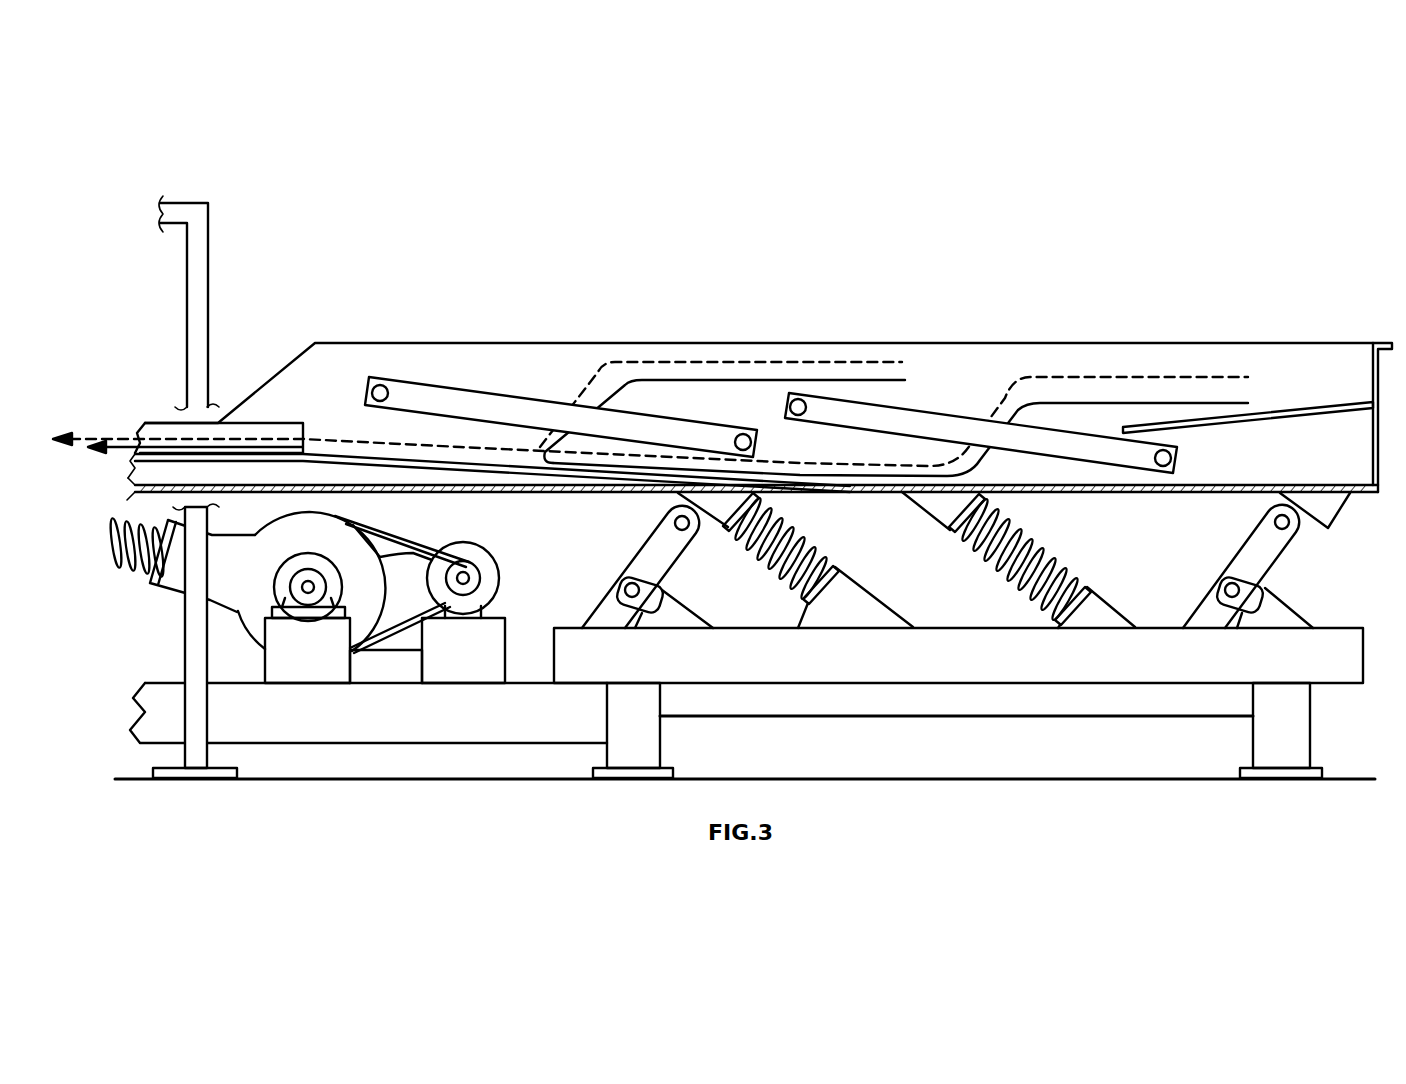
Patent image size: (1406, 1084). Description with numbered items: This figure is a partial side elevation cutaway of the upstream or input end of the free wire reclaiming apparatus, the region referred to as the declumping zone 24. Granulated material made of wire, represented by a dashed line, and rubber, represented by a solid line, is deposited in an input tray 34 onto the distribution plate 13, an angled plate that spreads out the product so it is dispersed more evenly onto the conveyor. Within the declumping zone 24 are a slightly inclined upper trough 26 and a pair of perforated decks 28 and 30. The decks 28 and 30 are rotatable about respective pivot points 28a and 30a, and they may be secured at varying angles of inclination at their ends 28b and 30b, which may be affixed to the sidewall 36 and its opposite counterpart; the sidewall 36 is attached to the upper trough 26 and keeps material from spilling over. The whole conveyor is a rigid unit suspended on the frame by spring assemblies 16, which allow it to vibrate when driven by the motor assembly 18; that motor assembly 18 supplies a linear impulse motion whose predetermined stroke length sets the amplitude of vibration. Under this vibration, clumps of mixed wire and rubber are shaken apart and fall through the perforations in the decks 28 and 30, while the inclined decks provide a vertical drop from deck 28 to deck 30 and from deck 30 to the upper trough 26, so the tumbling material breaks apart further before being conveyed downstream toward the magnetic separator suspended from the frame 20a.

The distribution plate 13 is at (1300, 402).
The spring assemblies 16 is at (832, 548).
The motor assembly 18 is at (418, 551).
The frame 20a is at (209, 265).
The declumping zone 24 is at (992, 355).
The upper trough 26 is at (345, 454).
The perforated deck 28 is at (1019, 419).
The pivot point 28a is at (1172, 458).
The end 28b is at (806, 415).
The perforated deck 30 is at (561, 405).
The pivot point 30a is at (735, 438).
The end 30b is at (389, 393).
The input tray 34 is at (1333, 472).
The sidewall 36 is at (1338, 342).